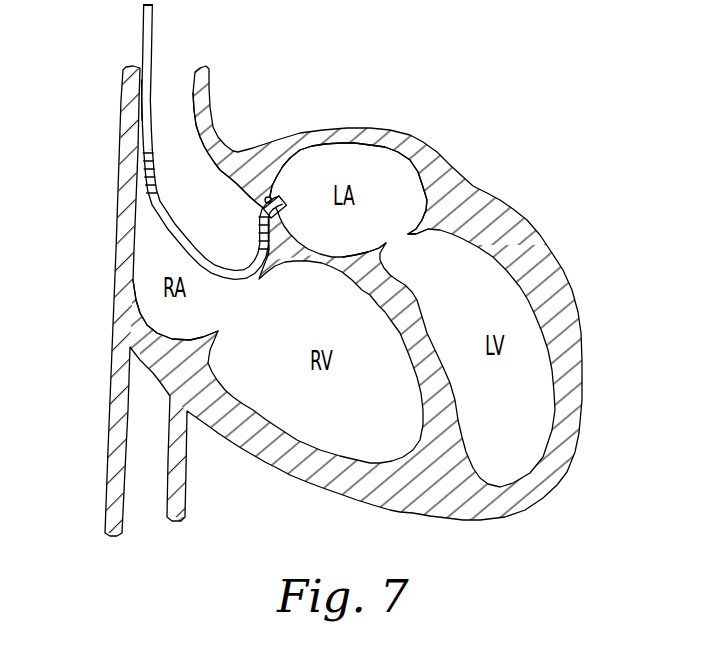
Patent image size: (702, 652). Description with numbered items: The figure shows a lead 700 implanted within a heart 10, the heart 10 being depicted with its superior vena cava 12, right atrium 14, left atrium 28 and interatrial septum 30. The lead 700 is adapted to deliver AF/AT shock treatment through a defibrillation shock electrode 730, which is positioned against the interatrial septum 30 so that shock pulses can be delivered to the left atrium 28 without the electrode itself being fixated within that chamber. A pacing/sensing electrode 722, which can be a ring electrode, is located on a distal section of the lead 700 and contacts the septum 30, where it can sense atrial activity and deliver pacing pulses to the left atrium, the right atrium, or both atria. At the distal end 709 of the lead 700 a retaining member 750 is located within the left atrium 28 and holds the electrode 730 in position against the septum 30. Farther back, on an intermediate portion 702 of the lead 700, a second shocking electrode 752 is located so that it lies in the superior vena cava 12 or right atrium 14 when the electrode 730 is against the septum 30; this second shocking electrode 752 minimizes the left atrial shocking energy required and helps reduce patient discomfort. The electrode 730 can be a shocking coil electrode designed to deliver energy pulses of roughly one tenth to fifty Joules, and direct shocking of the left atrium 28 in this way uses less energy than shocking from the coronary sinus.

The heart 10 is at (578, 337).
The superior vena cava 12 is at (167, 100).
The right atrium 14 is at (147, 268).
The left atrium 28 is at (367, 187).
The interatrial septum 30 is at (277, 226).
The lead 700 is at (165, 214).
The intermediate portion 702 is at (145, 133).
The distal end 709 is at (253, 192).
The pacing/sensing electrode 722 is at (257, 223).
The defibrillation shock electrode 730 is at (266, 250).
The retaining member 750 is at (279, 198).
The second shocking electrode 752 is at (145, 158).